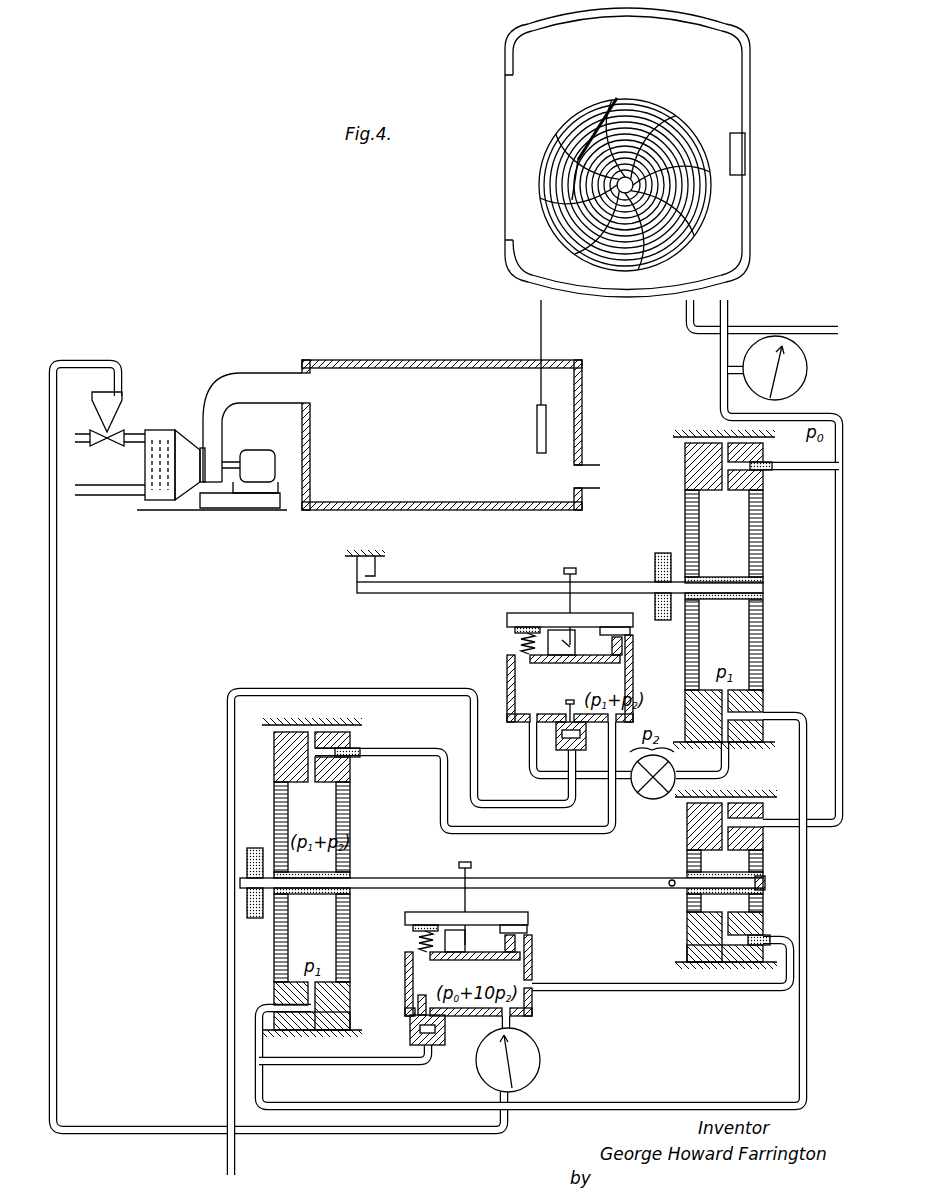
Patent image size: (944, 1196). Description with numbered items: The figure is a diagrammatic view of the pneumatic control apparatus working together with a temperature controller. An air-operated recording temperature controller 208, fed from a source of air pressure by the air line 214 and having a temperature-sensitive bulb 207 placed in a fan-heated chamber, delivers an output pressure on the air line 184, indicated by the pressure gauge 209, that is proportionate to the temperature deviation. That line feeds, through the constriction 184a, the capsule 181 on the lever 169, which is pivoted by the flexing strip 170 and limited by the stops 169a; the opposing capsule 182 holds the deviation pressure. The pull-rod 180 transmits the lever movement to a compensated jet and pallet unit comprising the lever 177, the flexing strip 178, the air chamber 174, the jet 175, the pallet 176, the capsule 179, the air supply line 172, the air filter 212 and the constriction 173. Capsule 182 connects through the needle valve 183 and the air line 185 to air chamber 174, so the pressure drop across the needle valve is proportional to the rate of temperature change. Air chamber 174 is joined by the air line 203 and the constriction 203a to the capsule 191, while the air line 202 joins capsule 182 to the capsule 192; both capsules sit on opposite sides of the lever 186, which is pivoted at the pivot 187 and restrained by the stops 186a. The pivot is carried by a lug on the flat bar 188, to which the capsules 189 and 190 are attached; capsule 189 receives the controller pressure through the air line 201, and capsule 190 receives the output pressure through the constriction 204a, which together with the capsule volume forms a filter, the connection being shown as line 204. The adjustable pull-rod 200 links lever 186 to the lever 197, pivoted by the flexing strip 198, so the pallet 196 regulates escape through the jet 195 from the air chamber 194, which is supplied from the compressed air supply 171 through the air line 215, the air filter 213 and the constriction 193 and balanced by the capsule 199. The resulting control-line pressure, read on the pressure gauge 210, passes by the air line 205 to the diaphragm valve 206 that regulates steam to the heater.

The lever 169 is at (494, 590).
The stops 169a is at (655, 590).
The flexing strip 170 is at (358, 582).
The compressed air supply 171 is at (232, 1160).
The air supply line 172 is at (382, 688).
The constriction 173 is at (566, 705).
The air chamber 174 is at (586, 690).
The jet 175 is at (624, 650).
The pallet 176 is at (626, 632).
The lever 177 is at (626, 622).
The flexing strip 178 is at (570, 638).
The capsule 179 is at (520, 638).
The pull-rod 180 is at (568, 596).
The capsule 181 is at (748, 545).
The capsule 182 is at (748, 645).
The needle valve 183 is at (653, 799).
The air line 184 is at (790, 418).
The constriction 184a is at (764, 470).
The air line 185 is at (530, 755).
The lever 186 is at (501, 870).
The stops 186a is at (240, 890).
The pivot 187 is at (673, 890).
The flat bar 188 is at (762, 882).
The capsule 189 is at (746, 871).
The capsule 190 is at (746, 911).
The capsule 191 is at (326, 812).
The capsule 192 is at (326, 934).
The constriction 193 is at (418, 1000).
The air chamber 194 is at (486, 982).
The jet 195 is at (517, 940).
The pallet 196 is at (527, 927).
The lever 197 is at (490, 904).
The flexing strip 198 is at (462, 938).
The capsule 199 is at (418, 940).
The adjustable pull-rod 200 is at (463, 870).
The air line 201 is at (838, 618).
The air line 202 is at (800, 1052).
The air line 203 is at (437, 752).
The constriction 203a is at (350, 758).
The pipe 204 is at (688, 990).
The constriction 204a is at (762, 937).
The air line 205 is at (352, 1130).
The diaphragm valve 206 is at (120, 402).
The temperature-sensitive bulb 207 is at (537, 432).
The recording temperature controller 208 is at (706, 80).
The pressure gauge 209 is at (792, 366).
The pressure gauge 210 is at (540, 1062).
The air filter 212 is at (578, 750).
The air filter 213 is at (444, 1030).
The air line 214 is at (768, 330).
The air line 215 is at (343, 1062).